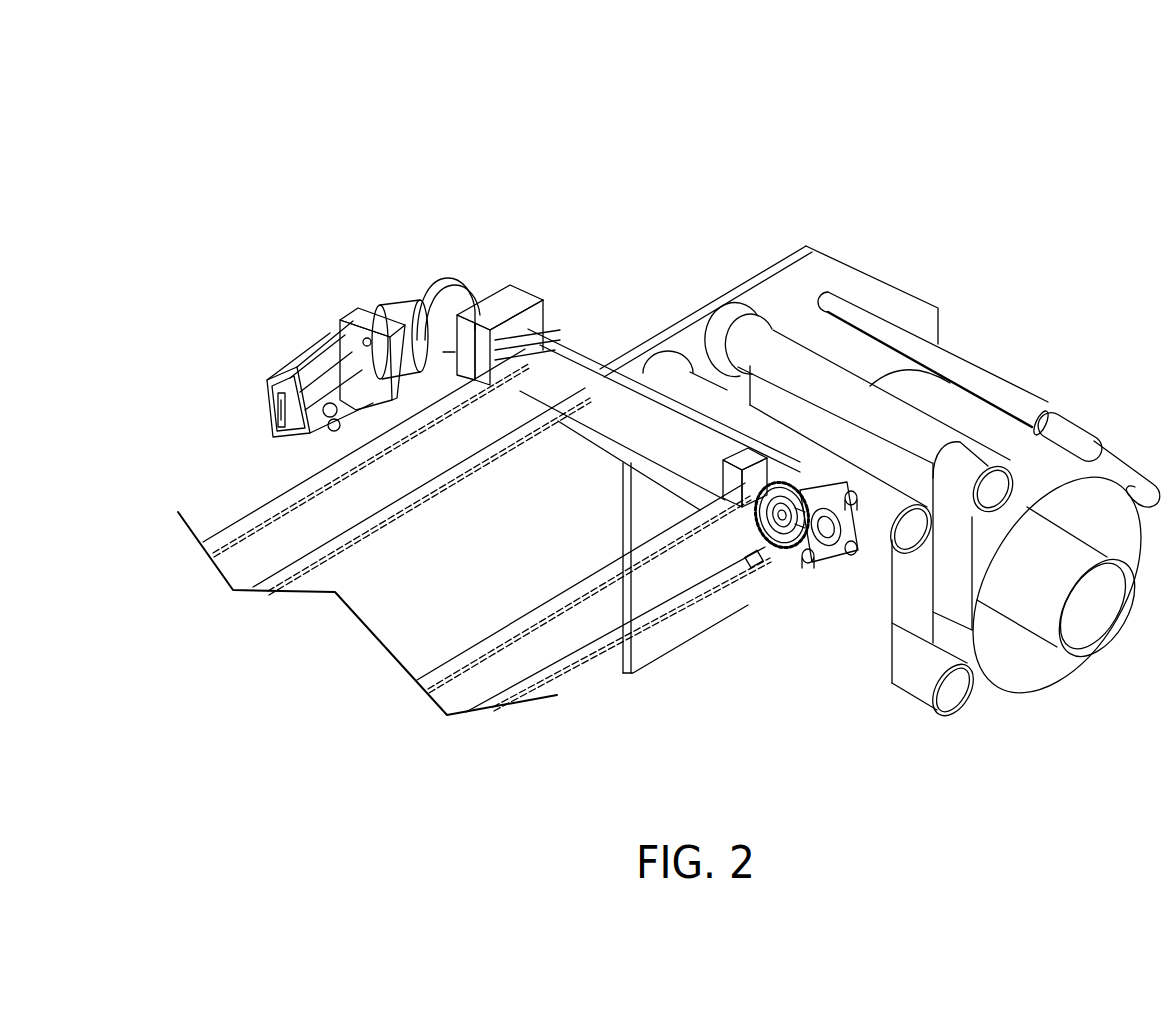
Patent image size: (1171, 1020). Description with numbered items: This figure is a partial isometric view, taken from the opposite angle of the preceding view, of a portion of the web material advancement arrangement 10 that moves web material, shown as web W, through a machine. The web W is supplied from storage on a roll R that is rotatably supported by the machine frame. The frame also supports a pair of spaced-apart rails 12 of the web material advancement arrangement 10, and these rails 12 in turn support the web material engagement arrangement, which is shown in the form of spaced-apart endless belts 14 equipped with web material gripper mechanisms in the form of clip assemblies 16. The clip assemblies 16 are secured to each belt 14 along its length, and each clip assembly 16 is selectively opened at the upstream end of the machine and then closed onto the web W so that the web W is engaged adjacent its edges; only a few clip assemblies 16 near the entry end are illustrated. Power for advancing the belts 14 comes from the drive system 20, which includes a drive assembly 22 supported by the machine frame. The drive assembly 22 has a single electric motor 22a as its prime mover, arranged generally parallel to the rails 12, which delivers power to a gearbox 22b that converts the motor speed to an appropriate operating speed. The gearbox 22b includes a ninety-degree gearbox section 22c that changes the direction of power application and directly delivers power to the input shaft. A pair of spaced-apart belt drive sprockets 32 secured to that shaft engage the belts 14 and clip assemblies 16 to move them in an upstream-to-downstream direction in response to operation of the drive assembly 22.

The web material advancement arrangement 10 is at (643, 112).
The rails 12 is at (486, 446).
The belts 14 is at (262, 506).
The clip assemblies 16 is at (535, 304).
The drive system 20 is at (413, 189).
The drive assembly 22 is at (326, 278).
The electric motor 22a is at (286, 359).
The gearbox 22b is at (354, 322).
The 90-degree gearbox section 22c is at (423, 273).
The belt drive sprockets 32 is at (815, 480).
The web W is at (843, 641).
The roll R is at (1093, 671).